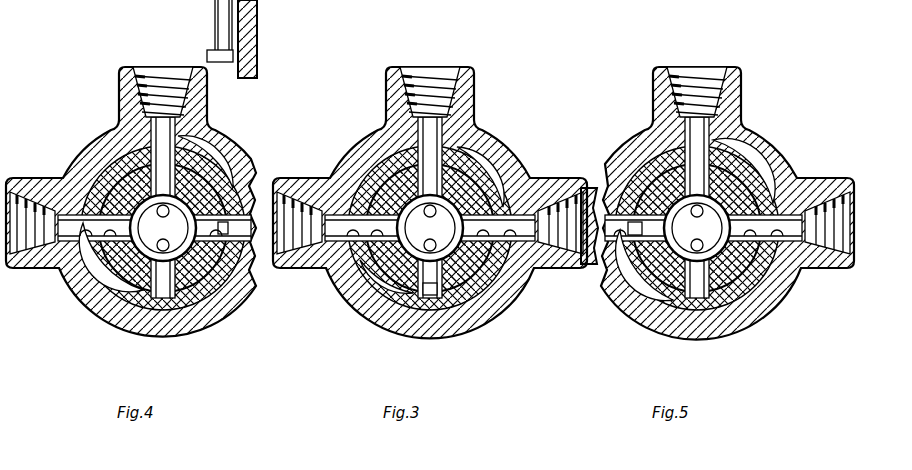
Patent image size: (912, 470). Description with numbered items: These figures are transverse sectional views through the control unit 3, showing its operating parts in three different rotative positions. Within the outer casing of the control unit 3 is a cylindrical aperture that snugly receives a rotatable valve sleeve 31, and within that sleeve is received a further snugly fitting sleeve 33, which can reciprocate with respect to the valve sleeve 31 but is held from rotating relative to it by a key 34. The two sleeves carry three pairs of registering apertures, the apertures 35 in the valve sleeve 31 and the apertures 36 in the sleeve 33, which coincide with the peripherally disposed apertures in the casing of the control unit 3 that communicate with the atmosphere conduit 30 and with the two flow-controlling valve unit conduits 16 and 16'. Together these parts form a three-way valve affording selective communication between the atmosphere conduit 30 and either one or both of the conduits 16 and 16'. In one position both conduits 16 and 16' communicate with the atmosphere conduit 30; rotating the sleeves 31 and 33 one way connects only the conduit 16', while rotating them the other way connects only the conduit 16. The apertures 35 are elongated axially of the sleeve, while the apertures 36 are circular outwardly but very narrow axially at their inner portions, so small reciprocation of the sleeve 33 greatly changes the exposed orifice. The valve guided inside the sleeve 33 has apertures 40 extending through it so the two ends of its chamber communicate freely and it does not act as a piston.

In FIG. 4, the control unit 3 is at (131, 202).
In FIG. 3, the control unit 3 is at (430, 202).
In FIG. 5, the control unit 3 is at (727, 203).
In FIG. 3, the conduit 16 is at (569, 199).
In FIG. 5, the conduit 16 is at (827, 248).
In FIG. 4, the conduit 16' is at (29, 246).
In FIG. 3, the conduit 16' is at (296, 198).
In FIG. 4, the atmosphere conduit 30 is at (163, 74).
In FIG. 3, the atmosphere conduit 30 is at (434, 79).
In FIG. 5, the atmosphere conduit 30 is at (711, 80).
In FIG. 4, the valve sleeve 31 is at (143, 224).
In FIG. 3, the valve sleeve 31 is at (422, 214).
In FIG. 5, the valve sleeve 31 is at (697, 259).
In FIG. 4, the sleeve 33 is at (163, 265).
In FIG. 3, the sleeve 33 is at (449, 255).
In FIG. 5, the sleeve 33 is at (678, 256).
In FIG. 4, the key 34 is at (177, 209).
In FIG. 3, the key 34 is at (403, 243).
In FIG. 5, the key 34 is at (686, 209).
In FIG. 4, the apertures 35 is at (142, 208).
In FIG. 3, the apertures 35 is at (445, 221).
In FIG. 5, the apertures 35 is at (714, 212).
In FIG. 4, the apertures 36 is at (155, 231).
In FIG. 3, the apertures 36 is at (425, 222).
In FIG. 5, the apertures 36 is at (714, 236).
In FIG. 3, the apertures 40 is at (430, 228).